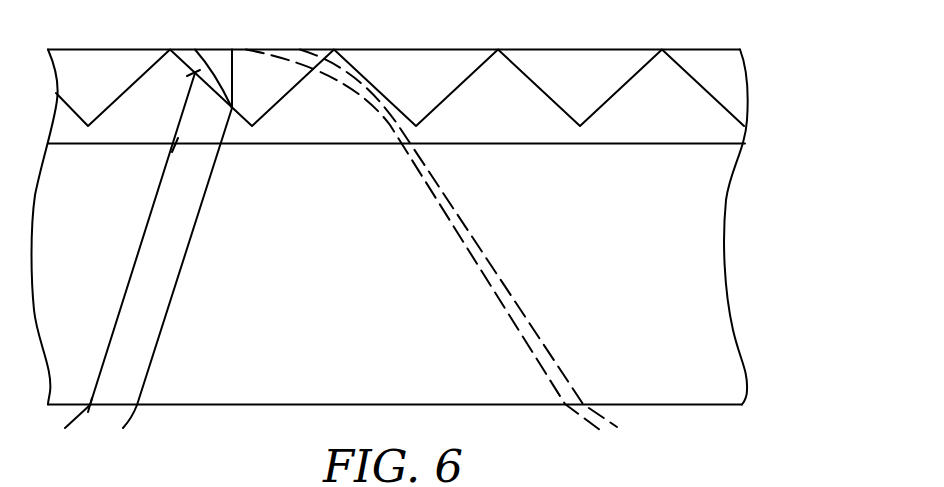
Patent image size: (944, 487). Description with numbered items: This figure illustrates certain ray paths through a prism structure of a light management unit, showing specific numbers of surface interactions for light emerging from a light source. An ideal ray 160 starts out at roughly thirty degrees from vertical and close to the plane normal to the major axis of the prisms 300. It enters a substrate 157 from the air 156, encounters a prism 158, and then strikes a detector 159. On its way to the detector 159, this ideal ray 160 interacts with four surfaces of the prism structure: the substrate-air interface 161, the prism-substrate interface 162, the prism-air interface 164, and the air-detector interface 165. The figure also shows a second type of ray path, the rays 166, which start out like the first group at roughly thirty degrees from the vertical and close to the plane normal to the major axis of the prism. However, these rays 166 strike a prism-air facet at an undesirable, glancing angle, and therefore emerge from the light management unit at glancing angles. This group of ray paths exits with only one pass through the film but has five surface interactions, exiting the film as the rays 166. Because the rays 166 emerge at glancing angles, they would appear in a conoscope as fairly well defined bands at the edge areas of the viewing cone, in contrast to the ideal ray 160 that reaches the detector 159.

The air 156 is at (725, 417).
The substrate 157 is at (712, 273).
The prism 158 is at (675, 95).
The detector 159 is at (715, 32).
The ideal ray 160 is at (135, 267).
The substrate-air interface 161 is at (90, 405).
The prism-substrate interface 162 is at (175, 144).
The prism-air interface 164 is at (195, 73).
The air-detector interface 165 is at (232, 78).
The rays exiting at glancing angles 166 is at (481, 267).
The prisms 300 is at (695, 78).